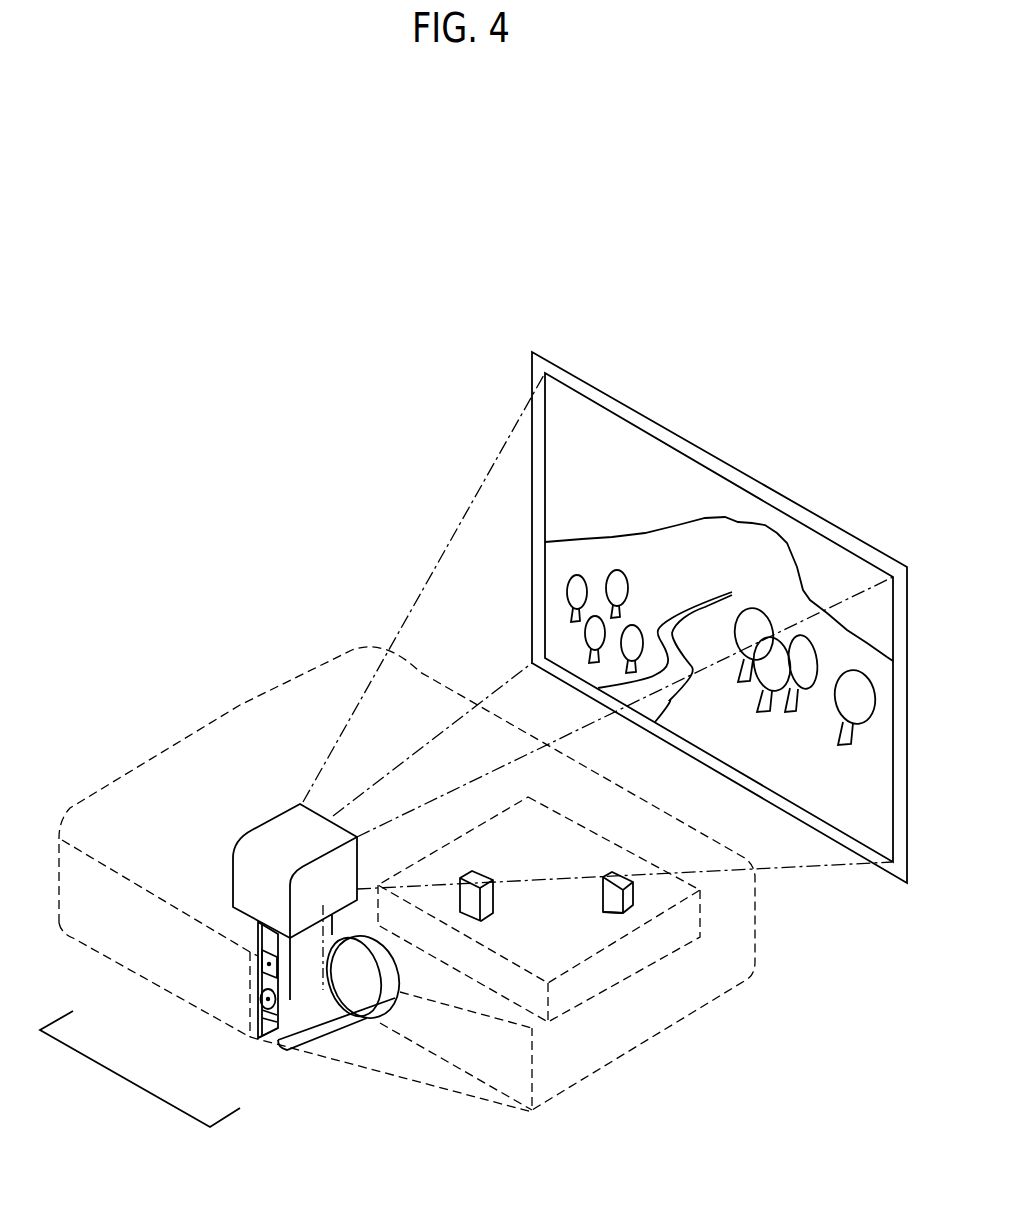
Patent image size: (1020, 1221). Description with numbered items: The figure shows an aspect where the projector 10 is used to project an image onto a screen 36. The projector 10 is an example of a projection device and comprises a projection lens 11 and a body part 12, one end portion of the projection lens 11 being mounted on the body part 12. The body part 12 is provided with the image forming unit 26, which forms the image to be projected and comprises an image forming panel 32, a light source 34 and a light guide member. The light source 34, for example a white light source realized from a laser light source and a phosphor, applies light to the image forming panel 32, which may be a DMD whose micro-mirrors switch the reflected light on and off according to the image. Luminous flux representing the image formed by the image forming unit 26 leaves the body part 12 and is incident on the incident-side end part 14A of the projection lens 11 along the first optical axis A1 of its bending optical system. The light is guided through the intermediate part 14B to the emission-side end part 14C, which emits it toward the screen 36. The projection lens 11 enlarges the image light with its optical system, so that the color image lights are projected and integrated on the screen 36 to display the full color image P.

The projector 10 is at (123, 1080).
The projection lens 11 is at (275, 1039).
The body part 12 is at (148, 965).
The incident-side end part 14A is at (395, 995).
The intermediate part 14B is at (270, 982).
The emission-side end part 14C is at (280, 815).
The image forming unit 26 is at (563, 813).
The image forming panel 32 is at (604, 892).
The light source 34 is at (603, 915).
The screen 36 is at (683, 437).
The full color image P is at (818, 552).
The first optical axis A1 is at (433, 933).